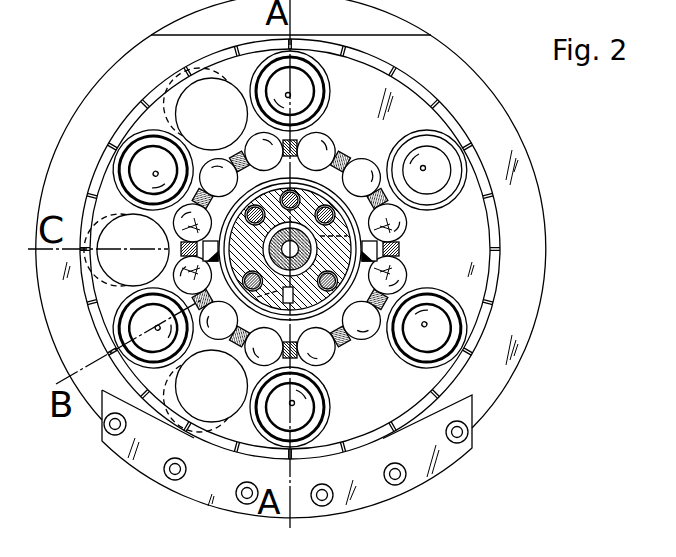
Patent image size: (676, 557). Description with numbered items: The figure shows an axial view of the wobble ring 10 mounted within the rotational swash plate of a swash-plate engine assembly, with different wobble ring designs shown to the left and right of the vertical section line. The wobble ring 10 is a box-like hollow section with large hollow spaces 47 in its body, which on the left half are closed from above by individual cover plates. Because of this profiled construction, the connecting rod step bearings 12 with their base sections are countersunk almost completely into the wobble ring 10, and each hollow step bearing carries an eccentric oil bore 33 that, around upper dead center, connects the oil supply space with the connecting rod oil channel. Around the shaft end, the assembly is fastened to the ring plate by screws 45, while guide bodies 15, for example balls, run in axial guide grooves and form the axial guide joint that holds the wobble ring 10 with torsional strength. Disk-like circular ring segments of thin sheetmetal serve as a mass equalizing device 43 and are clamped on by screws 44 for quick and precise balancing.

The wobble ring 10 is at (345, 99).
The connecting rod step bearings 12 is at (418, 194).
The guide bodies 15 is at (344, 344).
The eccentric oil bore 33 is at (438, 204).
The mass equalizing device 43 is at (202, 485).
The screws 44 is at (115, 426).
The screws 45 is at (327, 206).
The hollow spaces 47 is at (112, 201).